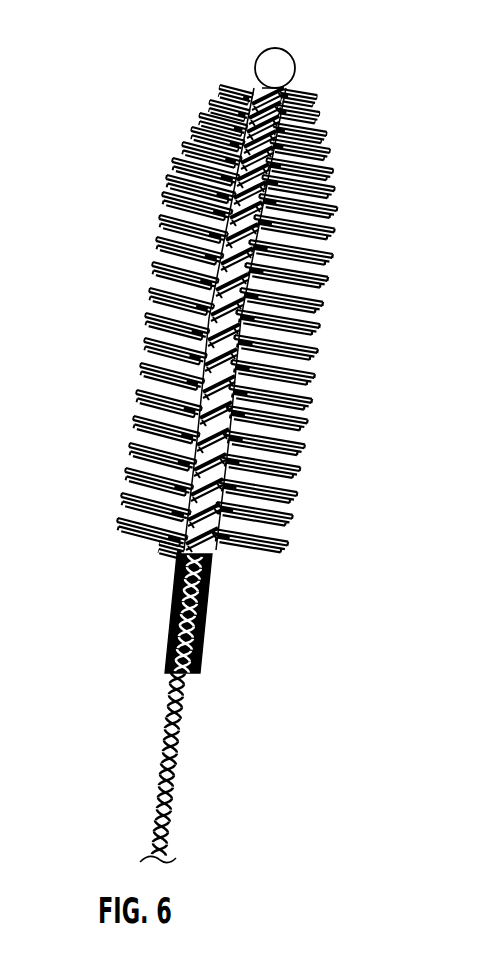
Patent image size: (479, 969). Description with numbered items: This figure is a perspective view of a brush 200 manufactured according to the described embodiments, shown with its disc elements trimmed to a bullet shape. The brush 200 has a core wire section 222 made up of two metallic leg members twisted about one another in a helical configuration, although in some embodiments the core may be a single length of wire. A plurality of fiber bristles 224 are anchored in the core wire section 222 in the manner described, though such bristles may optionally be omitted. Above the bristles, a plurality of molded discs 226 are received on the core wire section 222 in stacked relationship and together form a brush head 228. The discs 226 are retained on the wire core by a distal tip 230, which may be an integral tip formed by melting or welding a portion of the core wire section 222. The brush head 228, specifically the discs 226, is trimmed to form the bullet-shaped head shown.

The brush 200 is at (268, 38).
The core wire section 222 is at (184, 714).
The fiber bristles 224 is at (210, 603).
The molded discs 226 is at (192, 142).
The brush head 228 is at (333, 96).
The distal tip 230 is at (295, 58).